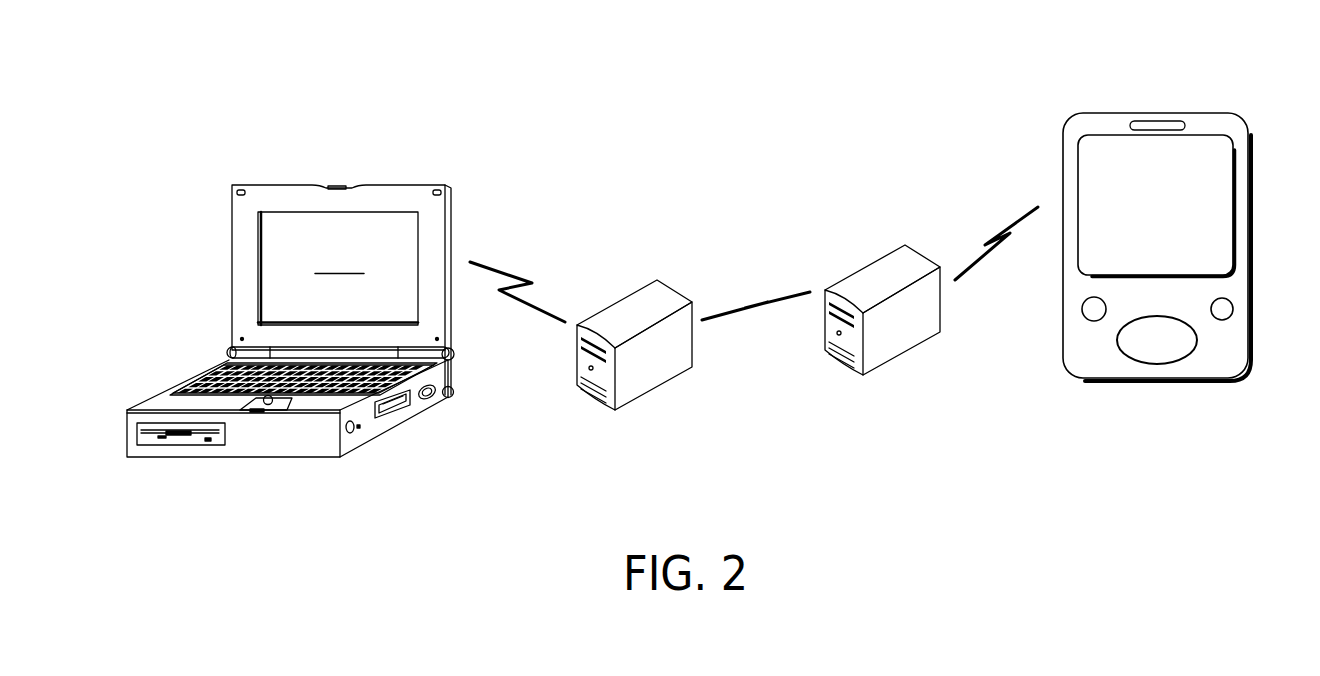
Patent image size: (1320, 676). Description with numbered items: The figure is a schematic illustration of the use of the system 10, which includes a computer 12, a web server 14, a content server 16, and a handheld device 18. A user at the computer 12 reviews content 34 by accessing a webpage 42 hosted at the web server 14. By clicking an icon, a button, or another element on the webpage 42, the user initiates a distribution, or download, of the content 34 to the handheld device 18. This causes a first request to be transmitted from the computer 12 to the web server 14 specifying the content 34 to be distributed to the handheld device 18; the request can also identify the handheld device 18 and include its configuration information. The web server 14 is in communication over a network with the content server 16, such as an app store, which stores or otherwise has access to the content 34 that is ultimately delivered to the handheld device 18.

The system 10 is at (222, 84).
The computer 12 is at (390, 185).
The web server 14 is at (617, 302).
The content server 16 is at (865, 266).
The handheld device 18 is at (1203, 113).
The content 34 is at (1146, 187).
The webpage 42 is at (258, 266).